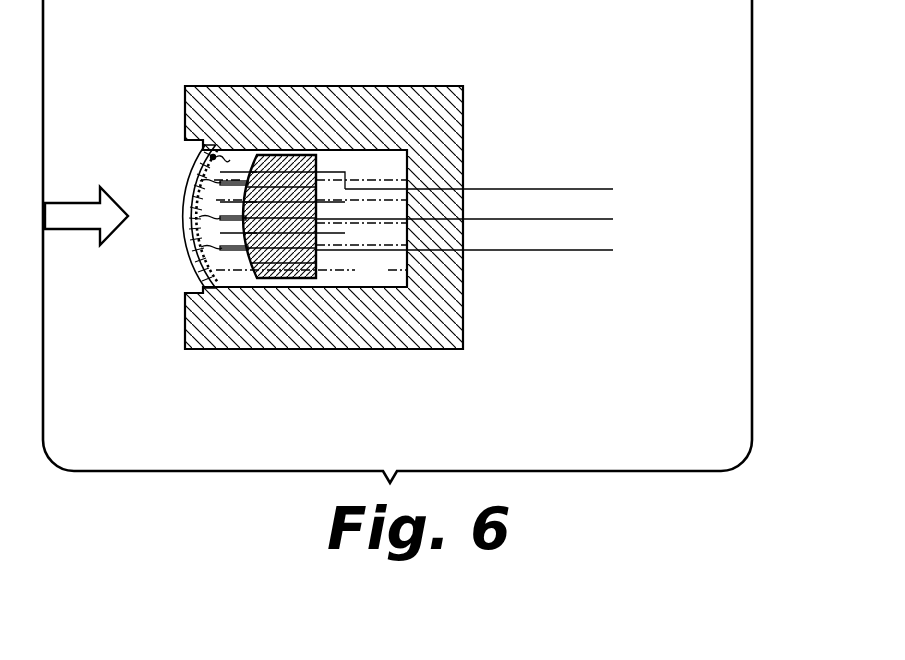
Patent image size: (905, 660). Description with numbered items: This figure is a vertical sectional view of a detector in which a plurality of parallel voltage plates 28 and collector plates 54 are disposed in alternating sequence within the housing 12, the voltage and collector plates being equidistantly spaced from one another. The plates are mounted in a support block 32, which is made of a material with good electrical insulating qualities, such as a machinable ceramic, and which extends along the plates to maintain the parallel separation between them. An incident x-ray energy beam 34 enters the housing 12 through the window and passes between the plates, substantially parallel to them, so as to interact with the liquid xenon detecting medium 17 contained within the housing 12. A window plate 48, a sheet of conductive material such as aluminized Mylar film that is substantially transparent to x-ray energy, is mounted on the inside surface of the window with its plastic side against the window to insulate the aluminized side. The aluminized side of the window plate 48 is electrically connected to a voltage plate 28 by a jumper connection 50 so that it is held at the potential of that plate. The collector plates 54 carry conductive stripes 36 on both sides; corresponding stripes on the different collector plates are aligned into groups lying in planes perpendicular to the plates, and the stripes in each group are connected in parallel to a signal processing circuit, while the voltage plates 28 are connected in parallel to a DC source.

The housing 12 is at (417, 350).
The liquid xenon detecting medium 17 is at (384, 278).
The voltage plate 28 is at (337, 203).
The support block 32 is at (299, 156).
The incident x-ray energy beam 34 is at (68, 202).
The conductive stripes 36 is at (199, 182).
The window plate 48 is at (206, 270).
The jumper connection 50 is at (236, 168).
The collector plate 54 is at (527, 251).